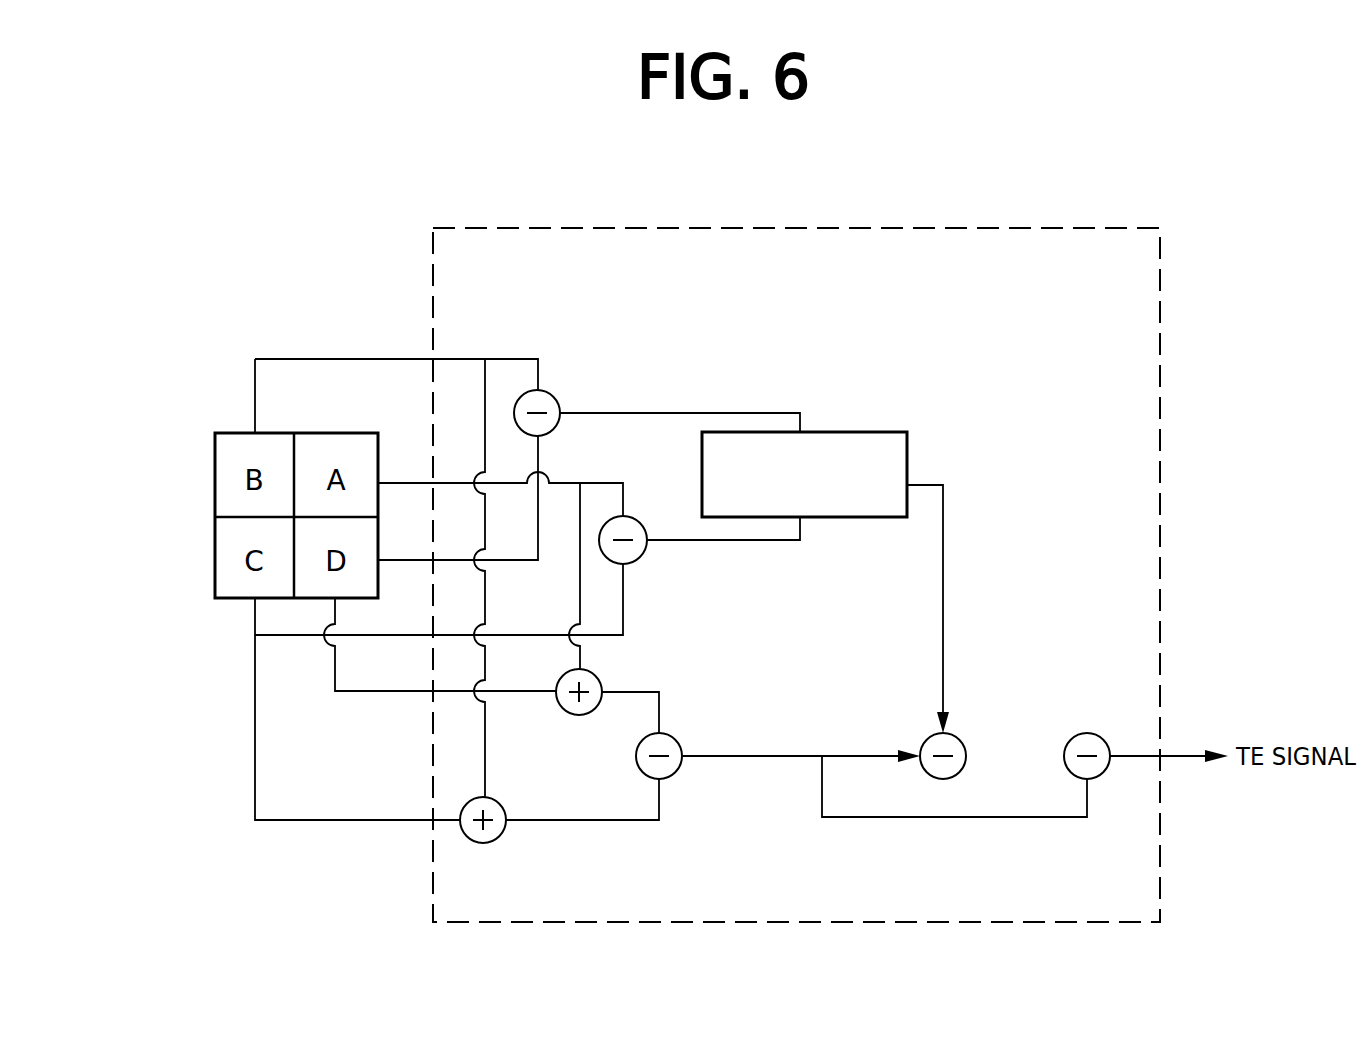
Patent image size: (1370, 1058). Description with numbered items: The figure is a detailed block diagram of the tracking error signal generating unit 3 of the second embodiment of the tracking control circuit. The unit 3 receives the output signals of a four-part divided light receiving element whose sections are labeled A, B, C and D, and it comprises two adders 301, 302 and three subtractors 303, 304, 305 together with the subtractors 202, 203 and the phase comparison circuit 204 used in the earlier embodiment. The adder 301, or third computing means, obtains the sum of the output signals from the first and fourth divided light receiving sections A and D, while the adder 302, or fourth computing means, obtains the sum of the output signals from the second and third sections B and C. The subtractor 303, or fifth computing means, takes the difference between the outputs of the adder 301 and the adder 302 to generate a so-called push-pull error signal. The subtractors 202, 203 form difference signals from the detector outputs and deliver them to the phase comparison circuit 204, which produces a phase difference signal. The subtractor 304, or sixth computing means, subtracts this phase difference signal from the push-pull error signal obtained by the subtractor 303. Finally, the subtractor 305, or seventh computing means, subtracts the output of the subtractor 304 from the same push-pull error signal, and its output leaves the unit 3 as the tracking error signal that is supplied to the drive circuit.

The tracking error signal generating unit 3 is at (1115, 228).
The subtractor 202 is at (632, 563).
The subtractor 203 is at (553, 397).
The phase comparison circuit 204 is at (860, 432).
The adder 301 is at (575, 715).
The adder 302 is at (495, 842).
The subtractor 303 is at (675, 775).
The subtractor 304 is at (960, 738).
The subtractor 305 is at (1090, 733).